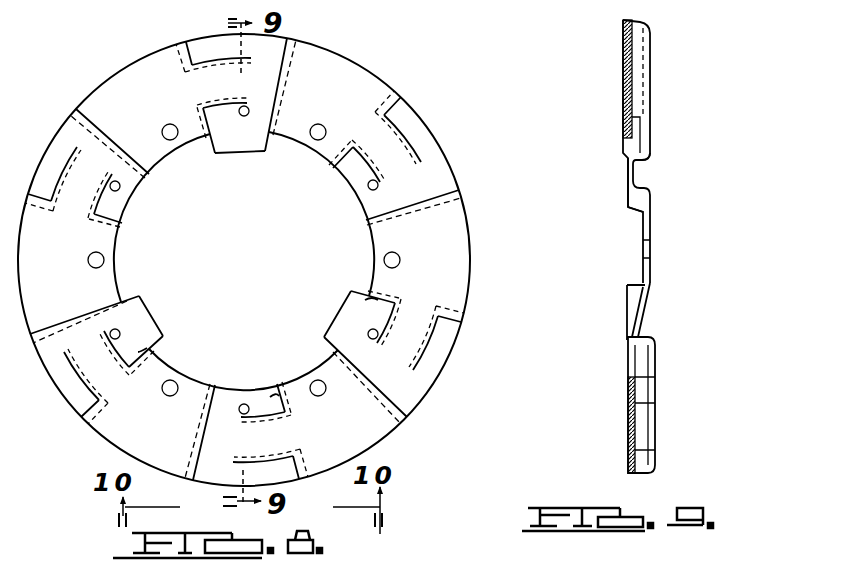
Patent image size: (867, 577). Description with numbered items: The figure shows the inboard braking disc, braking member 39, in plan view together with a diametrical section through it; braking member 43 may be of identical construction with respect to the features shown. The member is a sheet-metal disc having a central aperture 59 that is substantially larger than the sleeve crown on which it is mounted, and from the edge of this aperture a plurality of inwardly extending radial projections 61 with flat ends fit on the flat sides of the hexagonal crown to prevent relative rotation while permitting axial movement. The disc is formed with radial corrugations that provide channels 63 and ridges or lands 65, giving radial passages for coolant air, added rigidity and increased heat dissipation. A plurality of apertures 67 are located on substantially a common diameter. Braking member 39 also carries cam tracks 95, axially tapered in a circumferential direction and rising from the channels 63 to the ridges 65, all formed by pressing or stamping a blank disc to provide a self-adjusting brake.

In FIG. 8, the braking member 39 is at (396, 89).
In FIG. 9, the braking member 39 is at (653, 80).
In FIG. 8, the braking member 43 is at (426, 119).
In FIG. 9, the braking member 43 is at (648, 110).
In FIG. 8, the central aperture 59 is at (319, 156).
In FIG. 8, the radial projections 61 is at (253, 152).
In FIG. 8, the channels 63 is at (123, 290).
In FIG. 9, the channels 63 is at (651, 155).
In FIG. 8, the ridges 65 is at (112, 245).
In FIG. 9, the ridges 65 is at (624, 185).
In FIG. 8, the apertures 67 is at (136, 188).
In FIG. 9, the apertures 67 is at (623, 96).
In FIG. 8, the cam tracks 95 is at (383, 172).
In FIG. 9, the cam tracks 95 is at (650, 326).